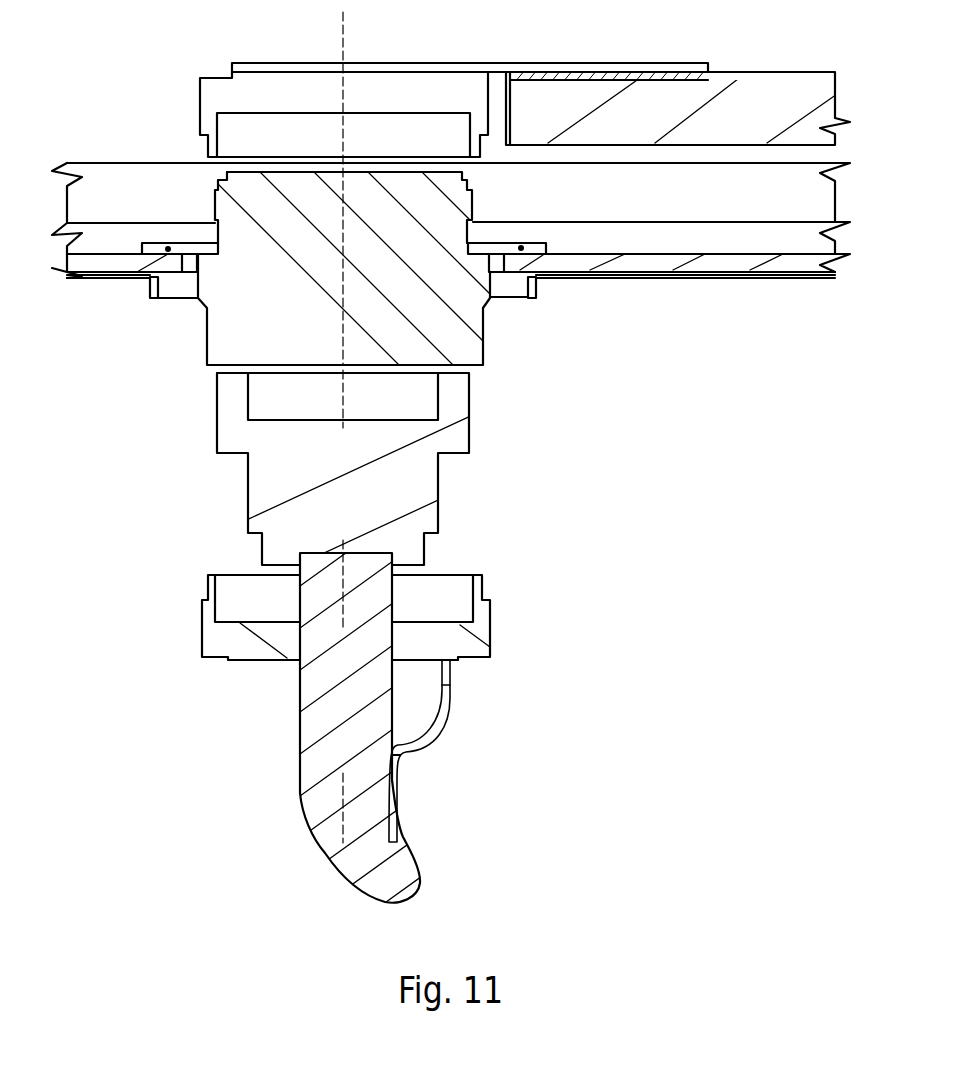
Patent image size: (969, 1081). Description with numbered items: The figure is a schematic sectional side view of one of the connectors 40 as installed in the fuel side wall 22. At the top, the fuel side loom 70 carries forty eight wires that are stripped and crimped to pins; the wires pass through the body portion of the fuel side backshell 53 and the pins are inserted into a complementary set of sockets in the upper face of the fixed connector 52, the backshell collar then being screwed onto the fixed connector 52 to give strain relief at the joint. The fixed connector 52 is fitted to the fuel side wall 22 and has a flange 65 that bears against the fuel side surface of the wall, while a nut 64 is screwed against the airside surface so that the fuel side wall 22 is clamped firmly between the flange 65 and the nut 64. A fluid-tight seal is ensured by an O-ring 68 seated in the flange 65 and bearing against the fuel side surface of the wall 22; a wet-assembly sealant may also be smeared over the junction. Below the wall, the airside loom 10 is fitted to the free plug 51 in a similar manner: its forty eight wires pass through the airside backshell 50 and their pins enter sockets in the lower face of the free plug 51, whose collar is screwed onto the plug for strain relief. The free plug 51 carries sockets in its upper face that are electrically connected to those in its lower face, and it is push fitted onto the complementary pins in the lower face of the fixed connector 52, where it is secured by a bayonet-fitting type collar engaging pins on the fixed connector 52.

The airside loom 10 is at (300, 757).
The fuel side wall 22 is at (617, 252).
The connector 40 is at (522, 432).
The airside backshell 50 is at (202, 633).
The free plug 51 is at (248, 475).
The fixed connector 52 is at (202, 322).
The fuel side backshell 53 is at (200, 115).
The nut 64 is at (532, 285).
The flange 65 is at (497, 240).
The O-ring 68 is at (167, 248).
The fuel side loom 70 is at (752, 72).